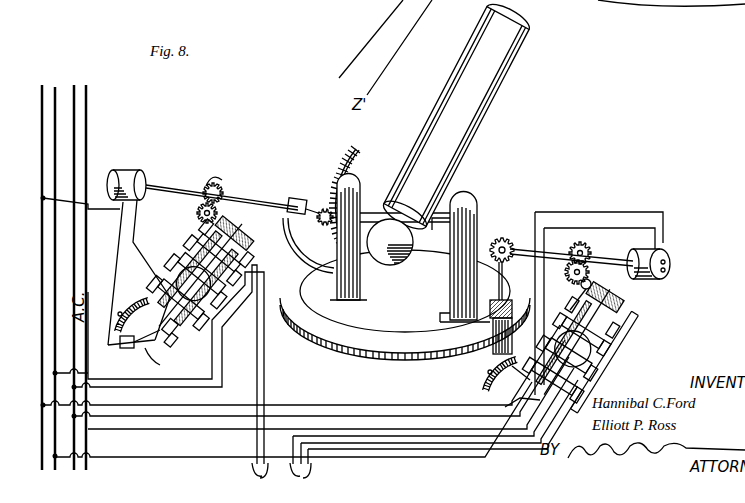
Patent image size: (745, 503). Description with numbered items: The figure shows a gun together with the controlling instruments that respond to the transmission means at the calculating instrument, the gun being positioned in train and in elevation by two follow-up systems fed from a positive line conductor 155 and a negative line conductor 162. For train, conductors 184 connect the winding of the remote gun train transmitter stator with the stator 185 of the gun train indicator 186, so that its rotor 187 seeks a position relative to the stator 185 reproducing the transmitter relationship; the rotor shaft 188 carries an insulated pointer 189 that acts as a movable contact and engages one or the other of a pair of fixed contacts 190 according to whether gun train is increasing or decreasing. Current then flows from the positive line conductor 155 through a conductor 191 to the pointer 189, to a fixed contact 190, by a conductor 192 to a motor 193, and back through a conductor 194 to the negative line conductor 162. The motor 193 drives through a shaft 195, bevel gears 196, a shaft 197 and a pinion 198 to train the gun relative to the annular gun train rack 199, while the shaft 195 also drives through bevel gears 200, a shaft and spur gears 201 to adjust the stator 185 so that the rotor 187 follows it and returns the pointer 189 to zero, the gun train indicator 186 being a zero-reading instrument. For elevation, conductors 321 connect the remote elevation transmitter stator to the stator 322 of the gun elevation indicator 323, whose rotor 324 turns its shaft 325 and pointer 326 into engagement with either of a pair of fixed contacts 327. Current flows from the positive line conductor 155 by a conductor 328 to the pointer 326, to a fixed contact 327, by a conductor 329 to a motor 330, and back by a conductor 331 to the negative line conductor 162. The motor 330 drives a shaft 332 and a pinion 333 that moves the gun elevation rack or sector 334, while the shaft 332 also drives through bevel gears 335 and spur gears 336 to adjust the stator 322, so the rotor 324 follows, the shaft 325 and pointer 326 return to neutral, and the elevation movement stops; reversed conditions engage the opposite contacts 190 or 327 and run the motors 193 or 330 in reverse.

The positive line conductor 155 is at (56, 88).
The negative line conductor 162 is at (43, 87).
The conductors 184 is at (312, 468).
The stator 185 is at (580, 283).
The gun train indicator 186 is at (473, 376).
The rotor 187 is at (622, 362).
The rotor shaft 188 is at (605, 362).
The pointer 189 is at (505, 407).
The fixed contacts 190 is at (484, 398).
The conductor 191 is at (177, 457).
The conductor 192 is at (648, 222).
The motor 193 is at (670, 262).
The conductor 194 is at (340, 404).
The shaft 195 is at (537, 228).
The bevel gears 196 is at (504, 238).
The shaft 197 is at (528, 212).
The pinion 198 is at (490, 350).
The annular gun train rack 199 is at (355, 352).
The bevel gears 200 is at (581, 243).
The spur gears 201 is at (592, 270).
The conductors 321 is at (252, 466).
The stator 322 is at (186, 270).
The gun elevation indicator 323 is at (137, 296).
The rotor 324 is at (201, 273).
The shaft 325 is at (172, 335).
The pointer 326 is at (170, 344).
The fixed contacts 327 is at (126, 348).
The conductor 328 is at (160, 365).
The conductor 329 is at (124, 244).
The motor 330 is at (128, 172).
The conductor 331 is at (122, 211).
The shaft 332 is at (270, 203).
The pinion 333 is at (316, 210).
The gun elevation rack or sector 334 is at (362, 148).
The bevel gears 335 is at (217, 186).
The spur gears 336 is at (197, 213).